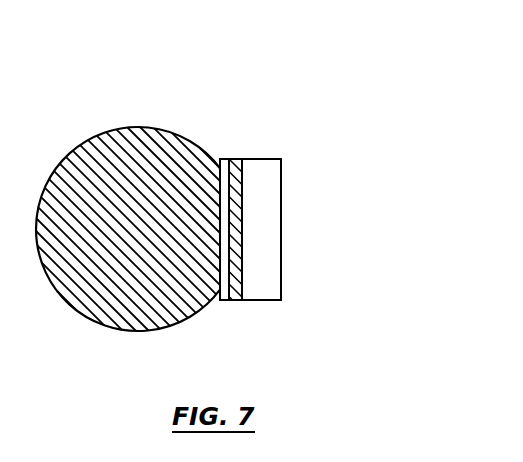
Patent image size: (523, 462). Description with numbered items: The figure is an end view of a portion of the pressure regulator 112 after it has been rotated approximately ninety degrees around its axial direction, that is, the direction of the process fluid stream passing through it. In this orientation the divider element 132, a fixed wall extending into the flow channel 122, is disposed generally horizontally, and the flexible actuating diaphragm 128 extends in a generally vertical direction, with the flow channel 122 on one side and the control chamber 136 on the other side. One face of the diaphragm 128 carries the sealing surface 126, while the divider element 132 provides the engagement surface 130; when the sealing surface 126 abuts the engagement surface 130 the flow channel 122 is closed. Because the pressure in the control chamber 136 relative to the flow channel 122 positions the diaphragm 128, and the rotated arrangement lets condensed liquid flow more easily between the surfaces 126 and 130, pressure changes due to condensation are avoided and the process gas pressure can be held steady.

The pressure regulator 112 is at (291, 97).
The flow channel 122 is at (225, 202).
The sealing surface 126 is at (232, 238).
The actuating diaphragm 128 is at (243, 215).
The engagement surface 130 is at (243, 192).
The divider element 132 is at (196, 308).
The control chamber 136 is at (268, 272).